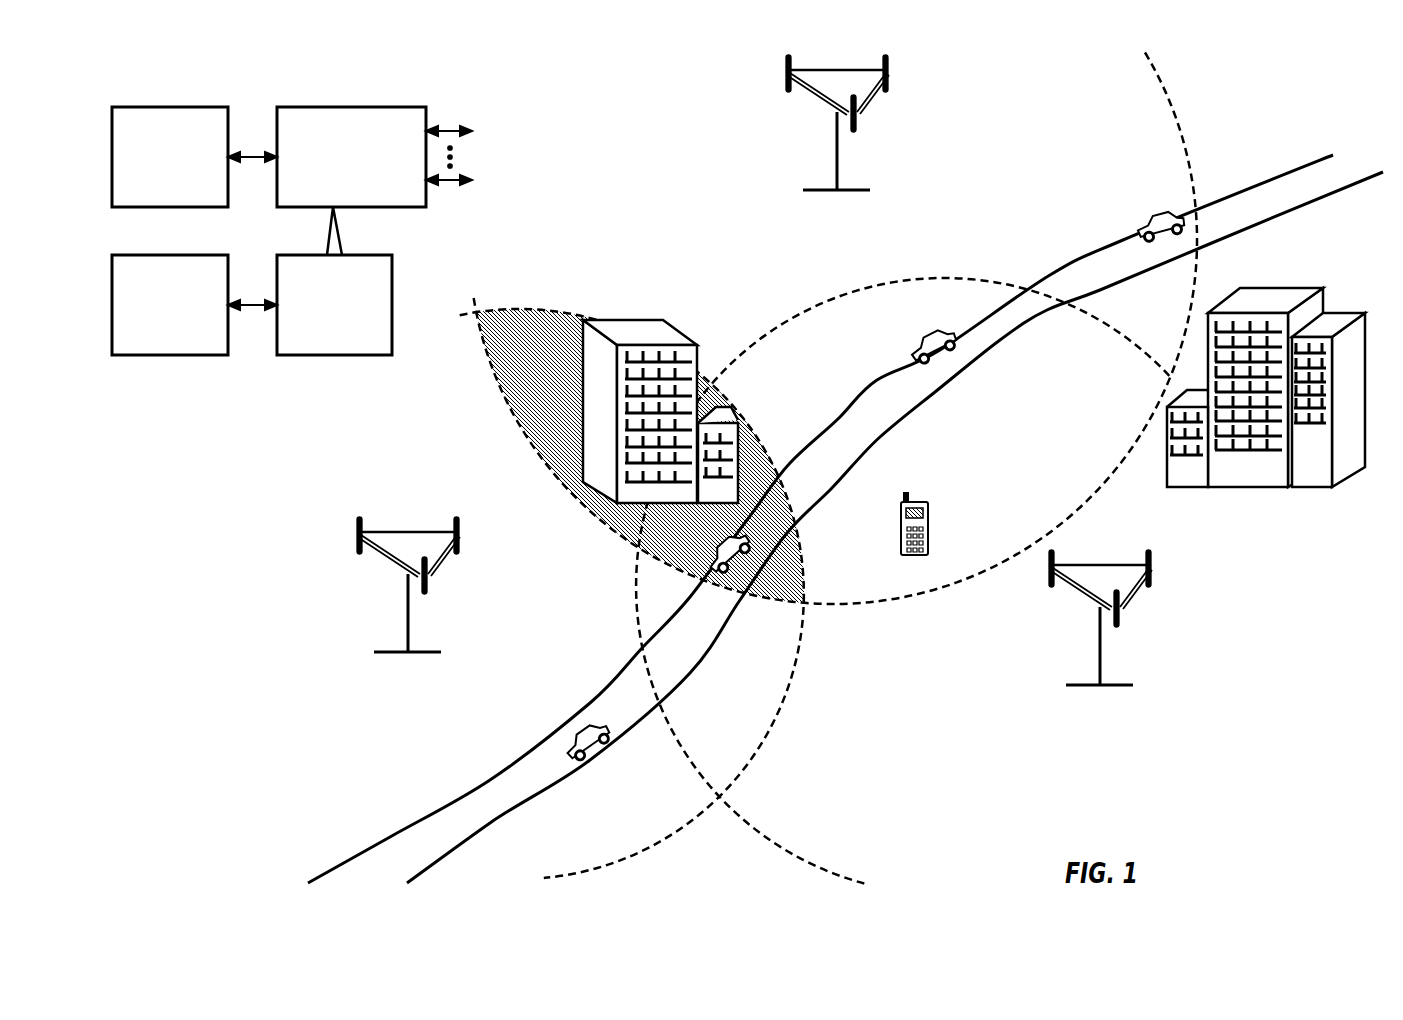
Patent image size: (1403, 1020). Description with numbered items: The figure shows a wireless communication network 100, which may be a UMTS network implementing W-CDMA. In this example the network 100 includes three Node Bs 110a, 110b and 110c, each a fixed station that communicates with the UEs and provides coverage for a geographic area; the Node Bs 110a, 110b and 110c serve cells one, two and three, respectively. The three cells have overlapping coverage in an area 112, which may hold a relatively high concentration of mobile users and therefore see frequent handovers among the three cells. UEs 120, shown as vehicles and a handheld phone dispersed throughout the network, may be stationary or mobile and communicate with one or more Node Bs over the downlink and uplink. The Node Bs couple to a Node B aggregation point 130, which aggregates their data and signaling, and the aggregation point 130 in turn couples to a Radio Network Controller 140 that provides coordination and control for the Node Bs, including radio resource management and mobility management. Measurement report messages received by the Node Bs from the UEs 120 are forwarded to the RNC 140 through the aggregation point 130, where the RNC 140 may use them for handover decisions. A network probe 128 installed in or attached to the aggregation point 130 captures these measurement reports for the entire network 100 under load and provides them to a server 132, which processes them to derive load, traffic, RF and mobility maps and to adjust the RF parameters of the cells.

The wireless communication network 100 is at (1281, 91).
The Node B 110a is at (405, 532).
The Node B 110b is at (1098, 565).
The Node B 110c is at (832, 70).
The area 112 is at (553, 377).
The UE 120 is at (1150, 214).
The network probe 128 is at (361, 255).
The Node B aggregation point 130 is at (345, 107).
The server 132 is at (163, 255).
The Radio Network Controller 140 is at (163, 107).